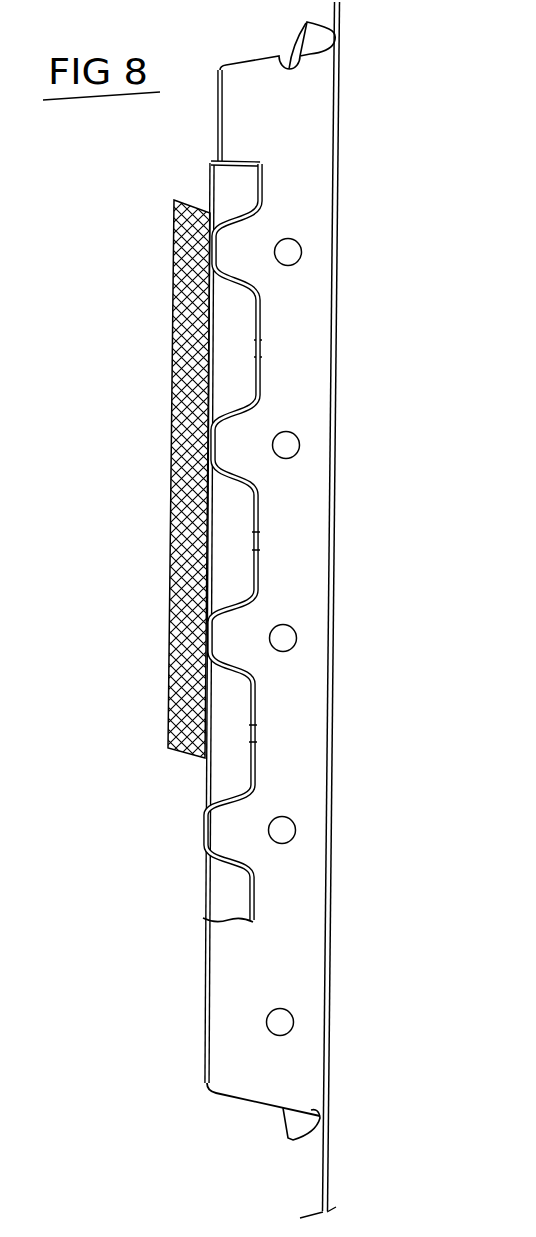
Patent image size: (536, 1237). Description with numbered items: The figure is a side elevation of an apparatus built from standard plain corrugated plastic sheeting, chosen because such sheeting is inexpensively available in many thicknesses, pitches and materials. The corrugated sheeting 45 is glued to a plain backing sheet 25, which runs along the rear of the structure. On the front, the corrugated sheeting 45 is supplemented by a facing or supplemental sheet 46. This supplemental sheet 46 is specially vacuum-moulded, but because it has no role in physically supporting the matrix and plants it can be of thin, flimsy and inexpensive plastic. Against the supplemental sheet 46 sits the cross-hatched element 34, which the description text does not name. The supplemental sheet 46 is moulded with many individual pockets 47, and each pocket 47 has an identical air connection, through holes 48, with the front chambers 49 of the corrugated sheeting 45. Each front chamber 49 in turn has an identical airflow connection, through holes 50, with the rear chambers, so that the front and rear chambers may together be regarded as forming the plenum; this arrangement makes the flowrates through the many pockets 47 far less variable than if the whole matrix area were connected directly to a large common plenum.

The plain backing sheet 25 is at (339, 314).
The sealing gasket 34 is at (184, 680).
The corrugated sheeting 45 is at (293, 596).
The supplemental sheet 46 is at (232, 778).
The pockets 47 is at (235, 540).
The holes 48 is at (258, 735).
The front chambers 49 is at (240, 1052).
The holes 50 is at (283, 832).